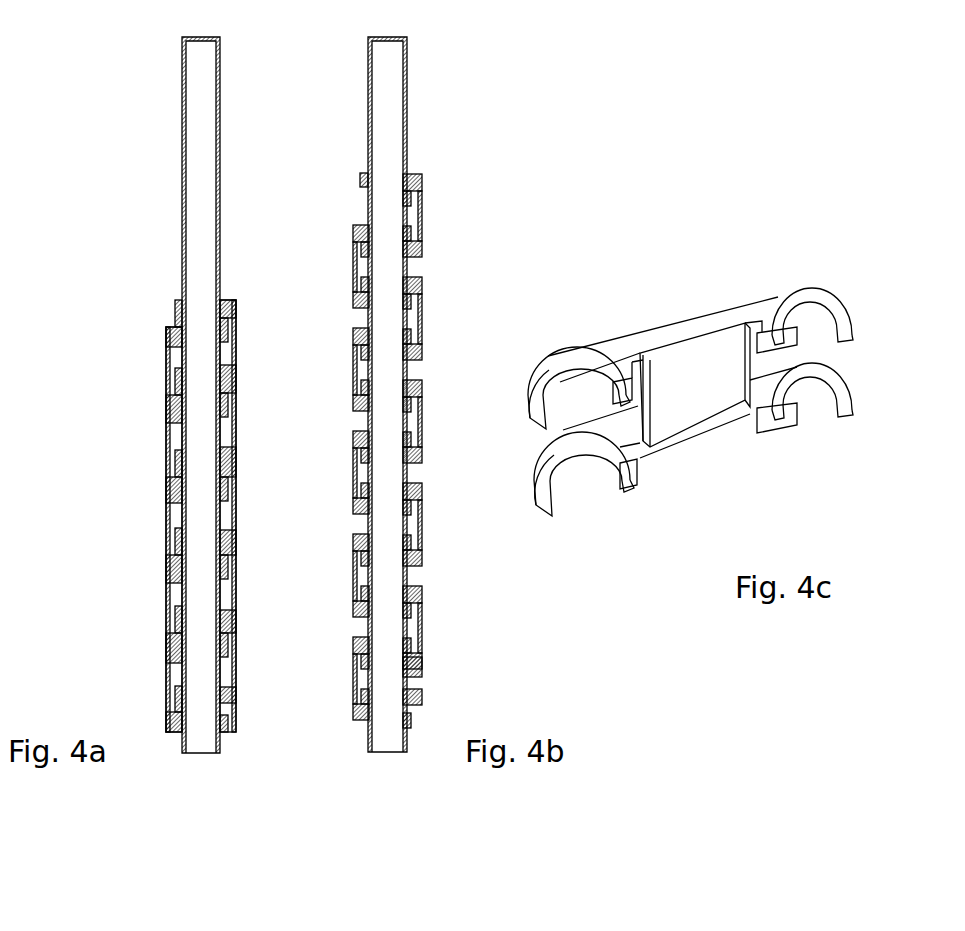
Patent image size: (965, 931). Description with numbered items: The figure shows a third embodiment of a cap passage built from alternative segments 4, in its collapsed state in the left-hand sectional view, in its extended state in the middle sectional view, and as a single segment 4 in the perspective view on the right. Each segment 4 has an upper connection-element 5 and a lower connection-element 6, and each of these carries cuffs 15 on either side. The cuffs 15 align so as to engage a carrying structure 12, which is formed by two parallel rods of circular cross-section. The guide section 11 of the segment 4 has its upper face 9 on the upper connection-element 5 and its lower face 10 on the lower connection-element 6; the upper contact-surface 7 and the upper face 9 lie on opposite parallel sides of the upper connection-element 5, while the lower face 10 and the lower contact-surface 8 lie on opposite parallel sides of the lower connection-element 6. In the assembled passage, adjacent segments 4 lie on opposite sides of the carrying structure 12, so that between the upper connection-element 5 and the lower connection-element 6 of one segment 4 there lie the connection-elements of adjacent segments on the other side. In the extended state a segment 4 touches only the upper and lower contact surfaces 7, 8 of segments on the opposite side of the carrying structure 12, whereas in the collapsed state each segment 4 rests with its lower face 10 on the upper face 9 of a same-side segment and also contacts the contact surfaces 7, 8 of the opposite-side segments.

In FIG. 4c, the segment 4 is at (680, 285).
In FIG. 4c, the upper connection-element 5 is at (573, 325).
In FIG. 4c, the lower connection-element 6 is at (555, 490).
In FIG. 4a, the upper contact-surface 7 is at (230, 400).
In FIG. 4b, the upper contact-surface 7 is at (420, 197).
In FIG. 4c, the upper contact-surface 7 is at (815, 333).
In FIG. 4a, the lower contact-surface 8 is at (166, 385).
In FIG. 4b, the lower contact-surface 8 is at (418, 603).
In FIG. 4c, the lower contact-surface 8 is at (840, 420).
In FIG. 4a, the upper face 9 is at (166, 322).
In FIG. 4c, the upper face 9 is at (545, 345).
In FIG. 4a, the lower face 10 is at (166, 652).
In FIG. 4c, the lower face 10 is at (605, 470).
In FIG. 4b, the guide section 11 is at (423, 322).
In FIG. 4c, the guide section 11 is at (683, 405).
In FIG. 4a, the carrying structure 12 is at (196, 118).
In FIG. 4b, the carrying structure 12 is at (387, 105).
In FIG. 4c, the cuffs 15 is at (808, 425).